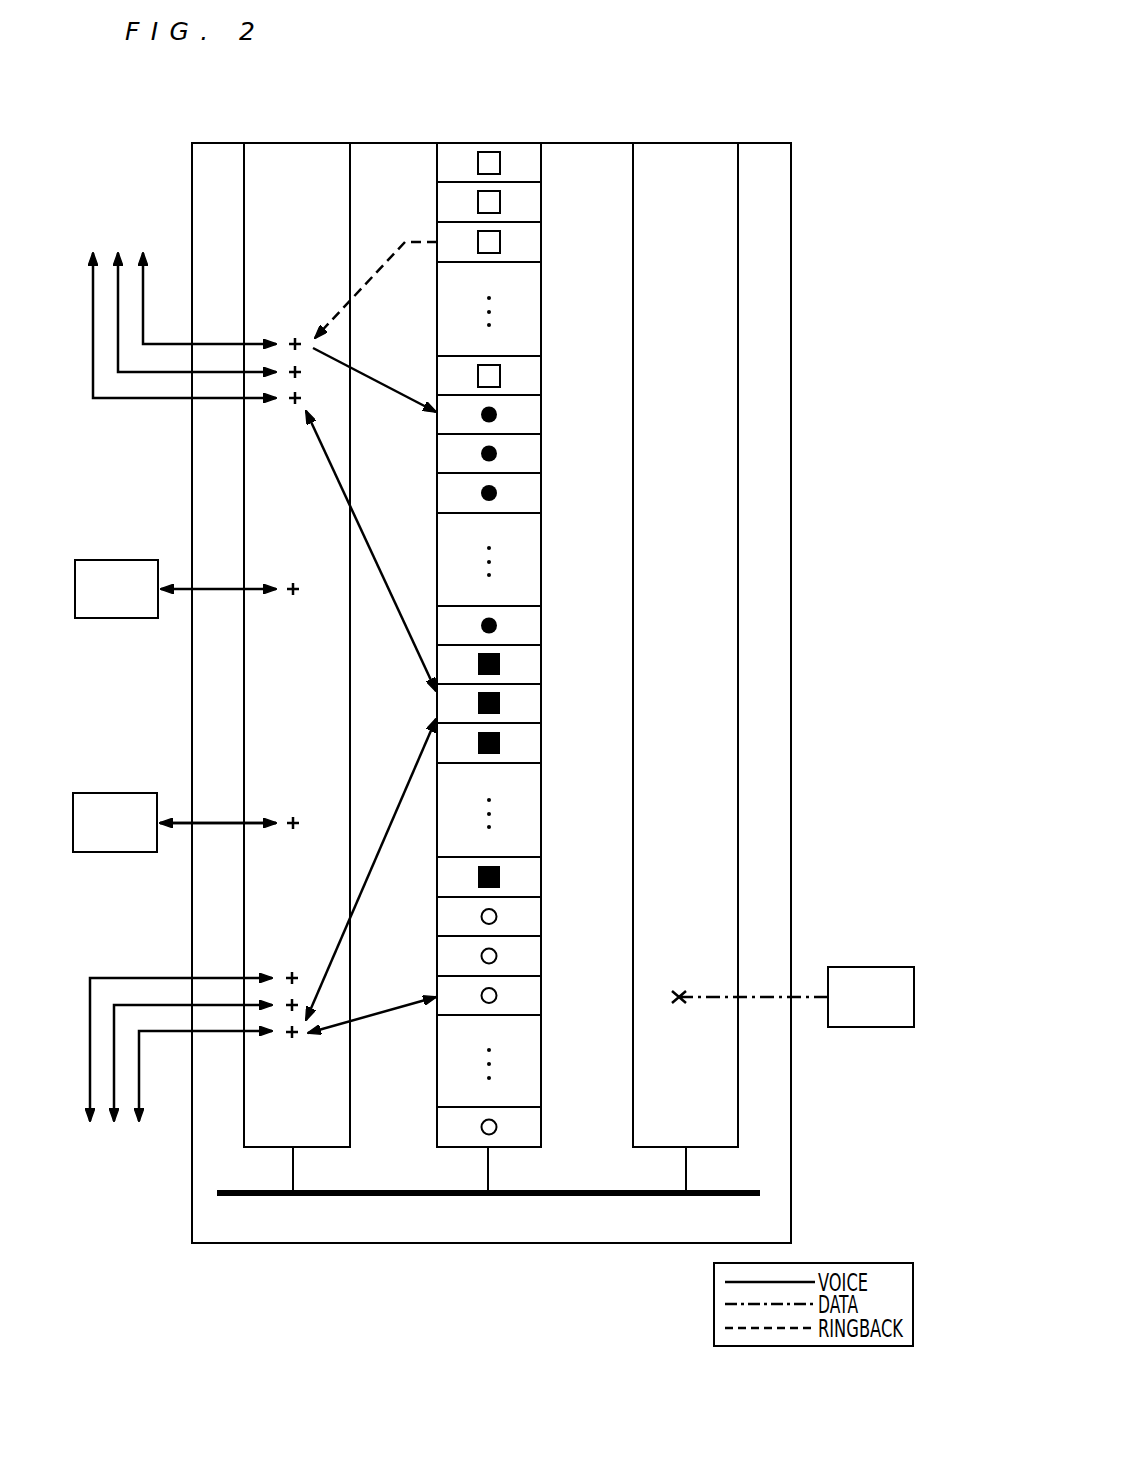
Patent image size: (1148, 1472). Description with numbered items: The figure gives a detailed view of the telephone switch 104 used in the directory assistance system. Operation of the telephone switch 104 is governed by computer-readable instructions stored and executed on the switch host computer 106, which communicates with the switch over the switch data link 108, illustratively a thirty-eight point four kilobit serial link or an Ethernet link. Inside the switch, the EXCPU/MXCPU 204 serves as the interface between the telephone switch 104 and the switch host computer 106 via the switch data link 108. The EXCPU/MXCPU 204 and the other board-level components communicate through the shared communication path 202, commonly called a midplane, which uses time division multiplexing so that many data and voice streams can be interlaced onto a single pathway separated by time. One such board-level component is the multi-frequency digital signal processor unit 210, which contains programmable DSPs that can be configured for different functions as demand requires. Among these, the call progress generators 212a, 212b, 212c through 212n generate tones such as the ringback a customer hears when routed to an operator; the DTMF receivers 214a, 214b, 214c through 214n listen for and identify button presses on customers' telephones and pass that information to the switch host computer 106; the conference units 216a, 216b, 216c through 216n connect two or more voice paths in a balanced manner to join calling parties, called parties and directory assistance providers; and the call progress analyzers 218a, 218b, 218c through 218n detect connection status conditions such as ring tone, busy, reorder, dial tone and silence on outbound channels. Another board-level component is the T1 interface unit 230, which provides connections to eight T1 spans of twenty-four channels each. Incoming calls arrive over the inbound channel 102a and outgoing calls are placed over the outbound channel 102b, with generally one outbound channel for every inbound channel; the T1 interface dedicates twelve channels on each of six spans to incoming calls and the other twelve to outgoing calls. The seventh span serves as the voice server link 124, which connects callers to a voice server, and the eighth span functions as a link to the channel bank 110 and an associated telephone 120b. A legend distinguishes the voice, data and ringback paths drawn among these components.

The telephone switch 104 is at (791, 183).
The shared communication path (midplane) 202 is at (410, 1198).
The T1 interface unit 230 is at (300, 142).
The multi-frequency digital signal processor (MFDSP) unit 210 is at (493, 142).
The EXCPU/MXCPU (expandable/matrix central processing unit) 204 is at (689, 142).
The call progress generator (CPG) 212a is at (544, 163).
The call progress generator (CPG) 212b is at (544, 202).
The call progress generator (CPG) 212c is at (544, 242).
The call progress generator (CPG) 212n is at (544, 375).
The DTMF receiver 214a is at (544, 414).
The DTMF receiver 214b is at (544, 453).
The DTMF receiver 214c is at (544, 493).
The DTMF receiver 214n is at (544, 625).
The conference unit 216a is at (544, 664).
The conference unit 216b is at (544, 703).
The conference unit 216c is at (544, 743).
The conference unit 216n is at (544, 877).
The call progress analyzer (CPA) 218a is at (544, 916).
The call progress analyzer (CPA) 218b is at (544, 956).
The call progress analyzer (CPA) 218c is at (544, 995).
The call progress analyzer (CPA) 218n is at (544, 1127).
The inbound channel 102a is at (143, 292).
The outbound channel 102b is at (140, 1086).
The channel bank 110 is at (175, 589).
The telephone 120b is at (174, 822).
The voice server link 124 is at (181, 820).
The switch host computer 106 is at (871, 997).
The switch data link 108 is at (770, 994).